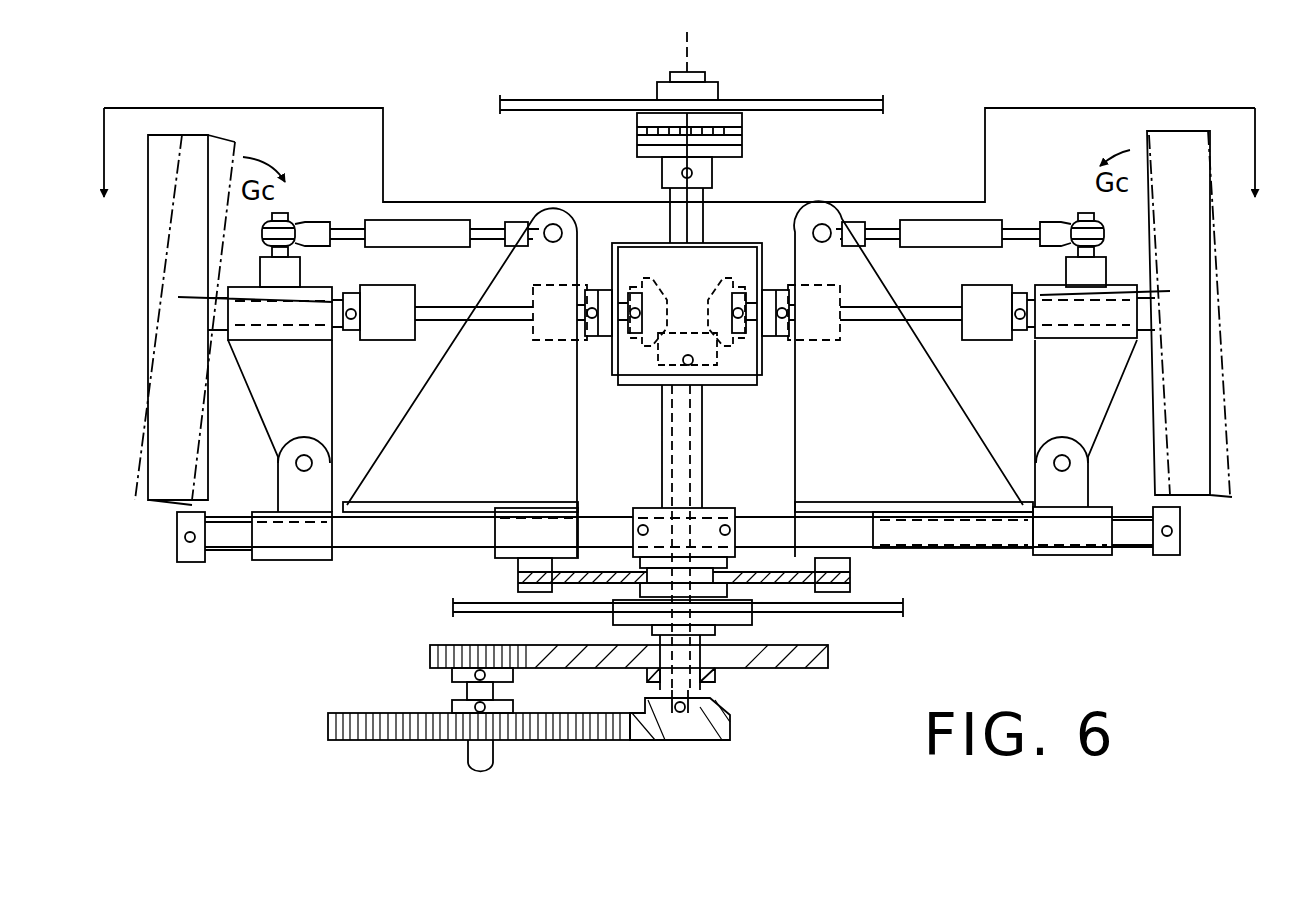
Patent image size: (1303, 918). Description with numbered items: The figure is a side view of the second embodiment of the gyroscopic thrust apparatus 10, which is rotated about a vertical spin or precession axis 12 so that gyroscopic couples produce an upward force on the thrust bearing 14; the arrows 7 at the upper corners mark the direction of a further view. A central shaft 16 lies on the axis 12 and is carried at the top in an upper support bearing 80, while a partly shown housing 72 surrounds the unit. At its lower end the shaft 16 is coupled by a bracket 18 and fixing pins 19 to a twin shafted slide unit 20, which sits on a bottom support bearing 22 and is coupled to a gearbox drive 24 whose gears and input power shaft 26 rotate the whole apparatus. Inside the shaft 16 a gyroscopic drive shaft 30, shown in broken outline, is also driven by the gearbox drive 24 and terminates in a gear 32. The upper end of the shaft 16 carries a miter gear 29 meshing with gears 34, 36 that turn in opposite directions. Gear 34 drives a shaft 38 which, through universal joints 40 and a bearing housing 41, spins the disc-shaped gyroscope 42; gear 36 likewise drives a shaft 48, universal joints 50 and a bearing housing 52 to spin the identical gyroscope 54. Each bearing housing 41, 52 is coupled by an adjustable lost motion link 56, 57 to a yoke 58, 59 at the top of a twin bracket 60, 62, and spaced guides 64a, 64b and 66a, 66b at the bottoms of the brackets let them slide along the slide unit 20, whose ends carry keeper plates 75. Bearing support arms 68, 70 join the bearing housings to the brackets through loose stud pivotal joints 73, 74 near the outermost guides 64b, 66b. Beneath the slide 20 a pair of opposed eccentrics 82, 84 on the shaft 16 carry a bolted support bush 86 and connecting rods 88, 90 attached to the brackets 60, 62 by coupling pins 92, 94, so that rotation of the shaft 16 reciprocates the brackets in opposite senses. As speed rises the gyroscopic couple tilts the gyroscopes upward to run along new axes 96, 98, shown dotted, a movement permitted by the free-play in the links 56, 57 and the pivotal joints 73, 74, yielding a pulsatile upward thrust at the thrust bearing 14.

The gyroscopic apparatus 10 is at (900, 118).
The section line 7 is at (681, 170).
The precession axis 12 is at (690, 50).
The housing 72 is at (857, 104).
The thrust bearing 14 is at (753, 126).
The upper support bearing 80 is at (622, 117).
The miter gear 29 is at (742, 352).
The gear 34 is at (656, 276).
The gear 36 is at (723, 277).
The gyroscopic drive shaft 30 is at (660, 403).
The central shaft 16 is at (702, 408).
The gyroscope 42 is at (148, 313).
The gyroscope 54 is at (1220, 300).
The bearing housing 41 is at (312, 292).
The adjustable lost motion link 56 is at (440, 220).
The bracket 60 is at (392, 446).
The yoke 58 is at (546, 218).
The new axis 96 is at (376, 340).
The shaft 38 is at (455, 303).
The universal joints 40 is at (543, 343).
The gyroscope housing bearing support arm 68 is at (265, 400).
The loose stud pivotal joint 73 is at (307, 470).
The eccentric 84 is at (640, 572).
The connecting rod 88 is at (570, 578).
The guide 64a is at (487, 558).
The guide 64b is at (262, 560).
The keeper plates 75 is at (180, 562).
The twin shafted slide unit 20 is at (1020, 533).
The guide 66a is at (872, 552).
The guide 66b is at (1097, 555).
The bracket 18 is at (728, 505).
The fixing pins 19 is at (643, 522).
The eccentric 82 is at (713, 565).
The coupling pin 92 is at (518, 590).
The coupling pin 94 is at (853, 560).
The support bush 86 is at (715, 590).
The connecting rod 90 is at (790, 608).
The bottom support bearing 22 is at (715, 630).
The gearbox drive arrangement 24 is at (726, 698).
The input power shaft 26 is at (468, 762).
The gear 32 is at (663, 742).
The bearing housing 52 is at (1125, 285).
The adjustable lost motion link 57 is at (993, 222).
The bracket 62 is at (986, 447).
The yoke 59 is at (812, 208).
The new axis 98 is at (990, 335).
The shaft 48 is at (904, 305).
The universal joints 50 is at (833, 343).
The gyroscope housing bearing support arm 70 is at (1097, 418).
The loose stud pivotal joint 74 is at (1067, 462).